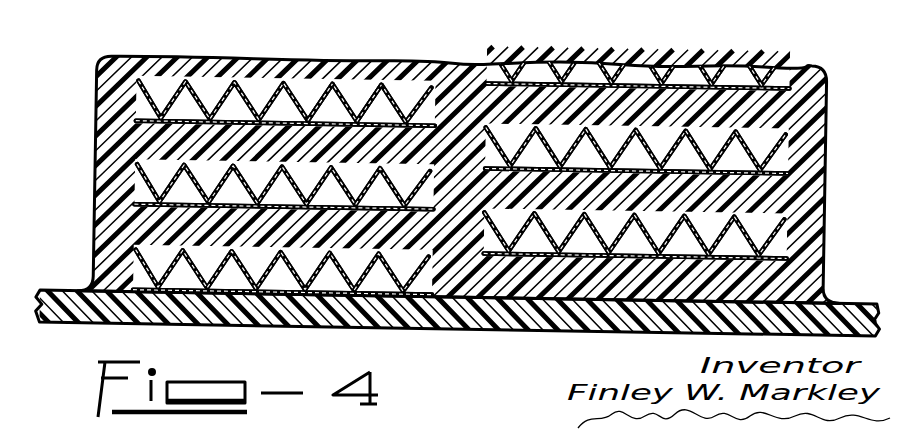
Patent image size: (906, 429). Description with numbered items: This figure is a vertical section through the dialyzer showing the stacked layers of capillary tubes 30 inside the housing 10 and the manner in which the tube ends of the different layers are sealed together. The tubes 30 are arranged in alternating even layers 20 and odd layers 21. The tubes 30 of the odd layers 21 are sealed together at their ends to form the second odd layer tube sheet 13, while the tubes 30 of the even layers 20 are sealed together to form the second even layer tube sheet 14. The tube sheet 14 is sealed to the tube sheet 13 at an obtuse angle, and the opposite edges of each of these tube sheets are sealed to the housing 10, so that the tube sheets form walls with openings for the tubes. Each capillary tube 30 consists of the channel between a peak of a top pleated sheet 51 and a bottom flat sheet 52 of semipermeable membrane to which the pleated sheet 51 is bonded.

The housing 10 is at (532, 326).
The second odd layer tube sheet 13 is at (300, 151).
The second even layer tube sheet 14 is at (668, 100).
The even layer 20 is at (772, 141).
The odd layer 21 is at (150, 98).
The capillary tube 30 is at (248, 78).
The top pleated sheet 51 is at (336, 76).
The bottom flat sheet 52 is at (384, 76).